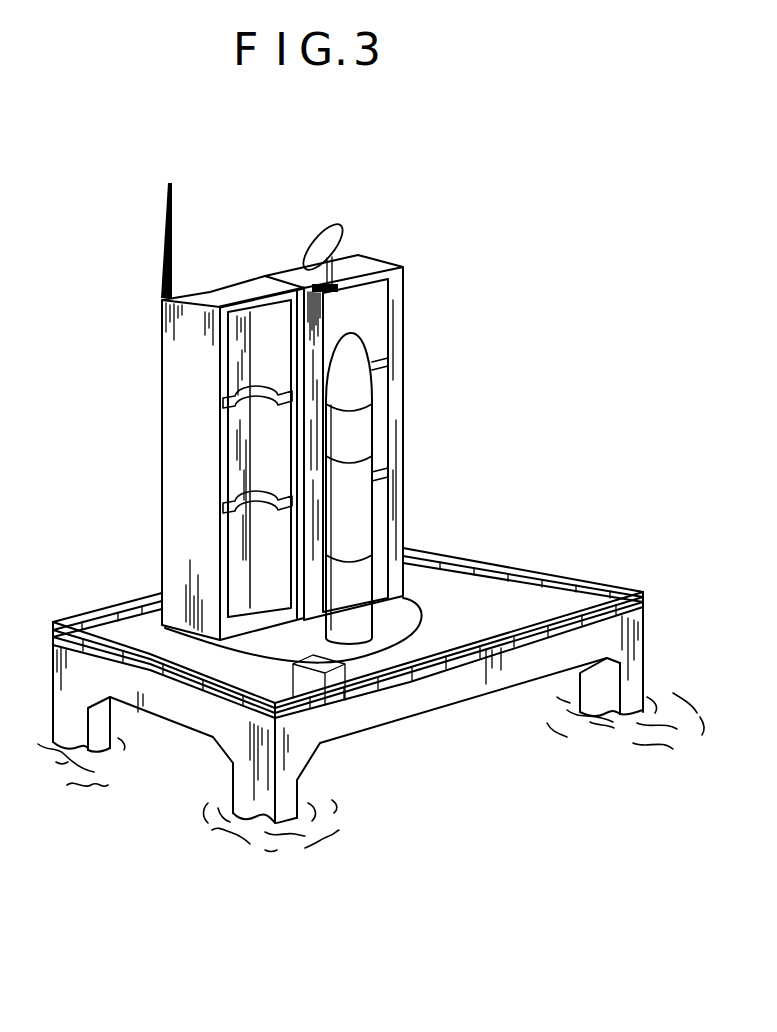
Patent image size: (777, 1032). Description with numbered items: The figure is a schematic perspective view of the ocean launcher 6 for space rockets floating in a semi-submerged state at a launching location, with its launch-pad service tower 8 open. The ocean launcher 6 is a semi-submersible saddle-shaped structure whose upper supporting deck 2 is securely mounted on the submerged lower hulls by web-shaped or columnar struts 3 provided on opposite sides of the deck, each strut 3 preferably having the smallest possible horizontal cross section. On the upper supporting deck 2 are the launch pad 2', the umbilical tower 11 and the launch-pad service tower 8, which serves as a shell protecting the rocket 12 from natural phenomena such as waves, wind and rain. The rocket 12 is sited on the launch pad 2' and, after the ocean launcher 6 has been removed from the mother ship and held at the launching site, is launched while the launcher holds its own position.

The upper supporting deck 2 is at (348, 625).
The launch pad 2' is at (343, 584).
The strut 3 is at (646, 698).
The ocean launcher 6 is at (137, 572).
The launch-pad service tower 8 is at (413, 367).
The umbilical tower 11 is at (340, 324).
The rocket 12 is at (350, 532).